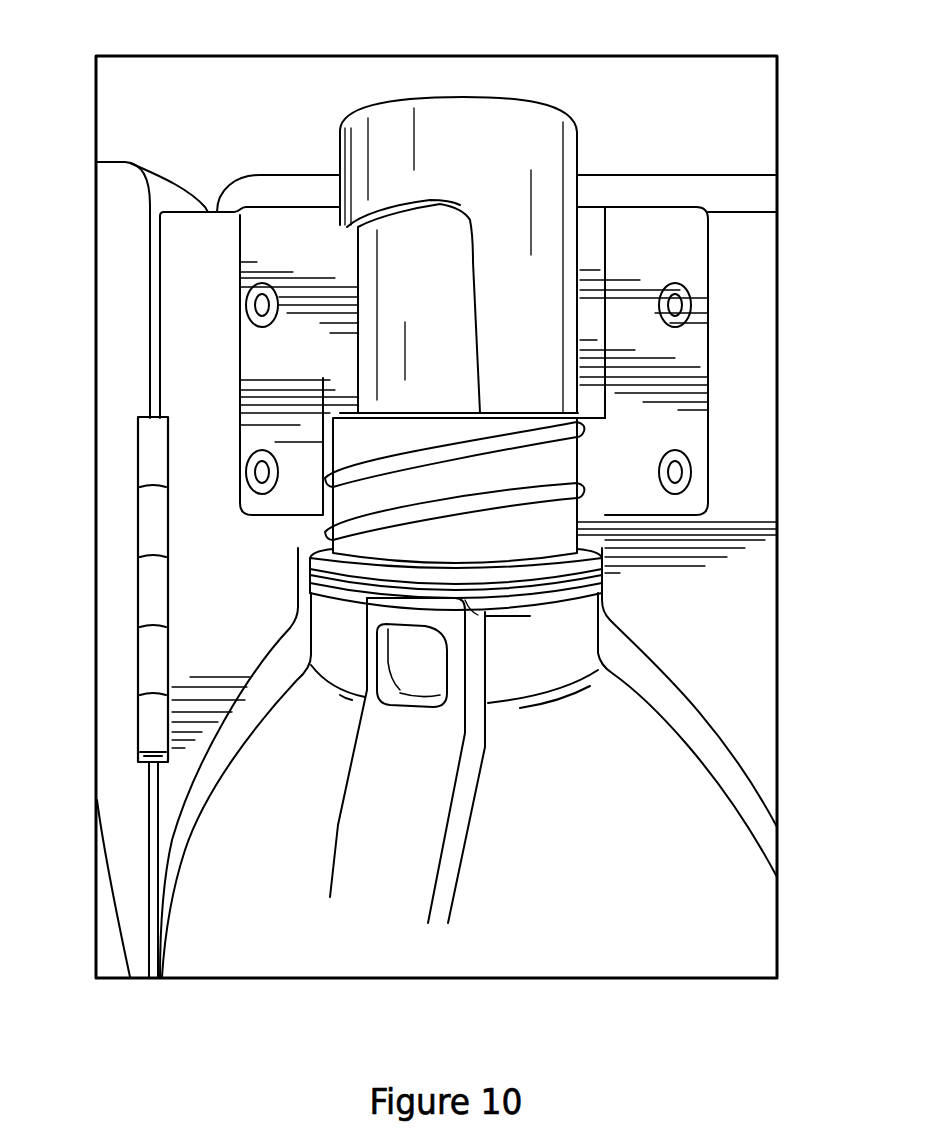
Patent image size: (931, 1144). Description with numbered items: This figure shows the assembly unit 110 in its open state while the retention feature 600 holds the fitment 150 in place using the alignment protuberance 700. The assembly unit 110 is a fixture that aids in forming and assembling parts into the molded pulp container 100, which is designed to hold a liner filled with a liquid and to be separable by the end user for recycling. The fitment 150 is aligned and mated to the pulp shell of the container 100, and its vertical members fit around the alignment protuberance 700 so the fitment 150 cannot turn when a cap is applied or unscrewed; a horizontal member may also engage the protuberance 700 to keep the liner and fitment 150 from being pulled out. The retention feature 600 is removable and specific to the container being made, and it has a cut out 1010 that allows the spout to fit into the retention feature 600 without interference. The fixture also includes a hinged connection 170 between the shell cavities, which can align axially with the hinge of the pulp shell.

The assembly unit 110 is at (760, 453).
The fitment retention feature 600 is at (640, 257).
The fitment 150 is at (373, 477).
The cut out 1010 is at (418, 257).
The container 100 is at (254, 865).
The alignment protuberance 700 is at (405, 670).
The hinged connection 170 is at (153, 533).